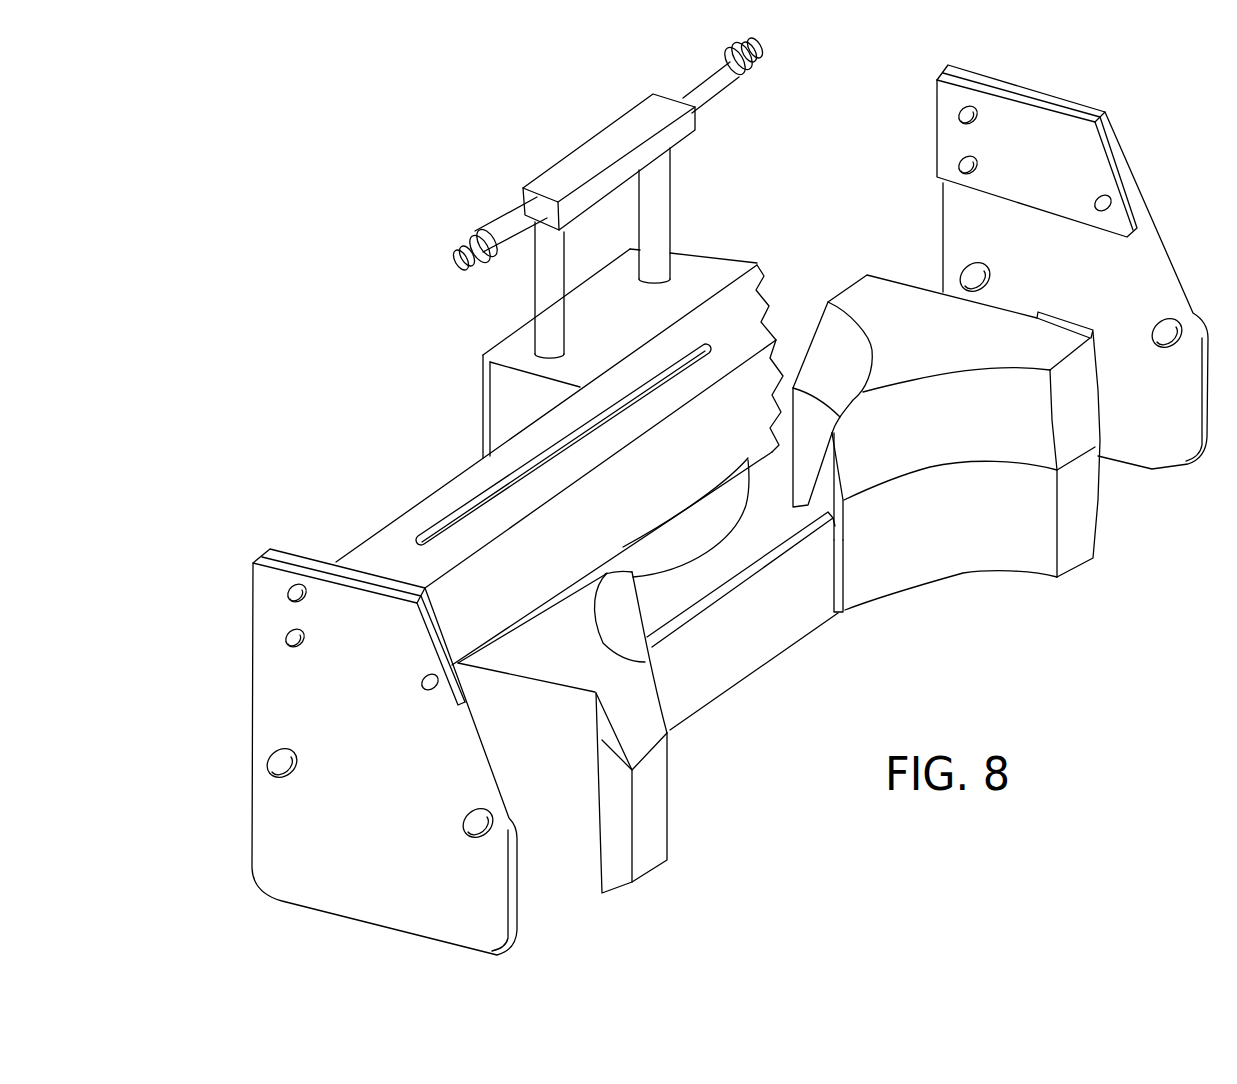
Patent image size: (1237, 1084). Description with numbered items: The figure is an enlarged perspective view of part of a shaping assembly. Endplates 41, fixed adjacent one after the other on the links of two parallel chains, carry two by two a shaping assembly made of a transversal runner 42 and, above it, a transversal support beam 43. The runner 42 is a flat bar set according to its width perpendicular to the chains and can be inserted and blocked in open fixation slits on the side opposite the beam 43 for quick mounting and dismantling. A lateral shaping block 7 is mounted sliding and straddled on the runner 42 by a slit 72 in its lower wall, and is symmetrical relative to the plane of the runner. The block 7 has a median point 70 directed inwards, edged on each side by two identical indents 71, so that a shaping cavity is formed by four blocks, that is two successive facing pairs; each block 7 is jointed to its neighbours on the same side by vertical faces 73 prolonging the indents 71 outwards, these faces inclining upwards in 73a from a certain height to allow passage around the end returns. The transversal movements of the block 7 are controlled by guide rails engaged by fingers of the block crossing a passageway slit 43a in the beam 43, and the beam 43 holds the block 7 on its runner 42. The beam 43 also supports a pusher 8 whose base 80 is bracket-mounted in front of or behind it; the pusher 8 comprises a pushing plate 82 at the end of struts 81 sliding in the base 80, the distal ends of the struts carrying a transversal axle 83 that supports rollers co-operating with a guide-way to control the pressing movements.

The lateral shaping block 7 is at (892, 307).
The pusher 8 is at (411, 350).
The endplate 41 is at (268, 723).
The transversal runner 42 is at (780, 630).
The transversal support beam 43 is at (425, 498).
The passageway slit 43a is at (448, 527).
The median point 70 is at (841, 592).
The indent 71 is at (830, 327).
The slit 72 is at (824, 590).
The vertical face 73 is at (1073, 540).
The inclined upper part of face 73a is at (1080, 407).
The base 80 is at (511, 397).
The strut 81 is at (650, 230).
The pushing plate 82 is at (703, 547).
The transversal axle 83 is at (507, 223).